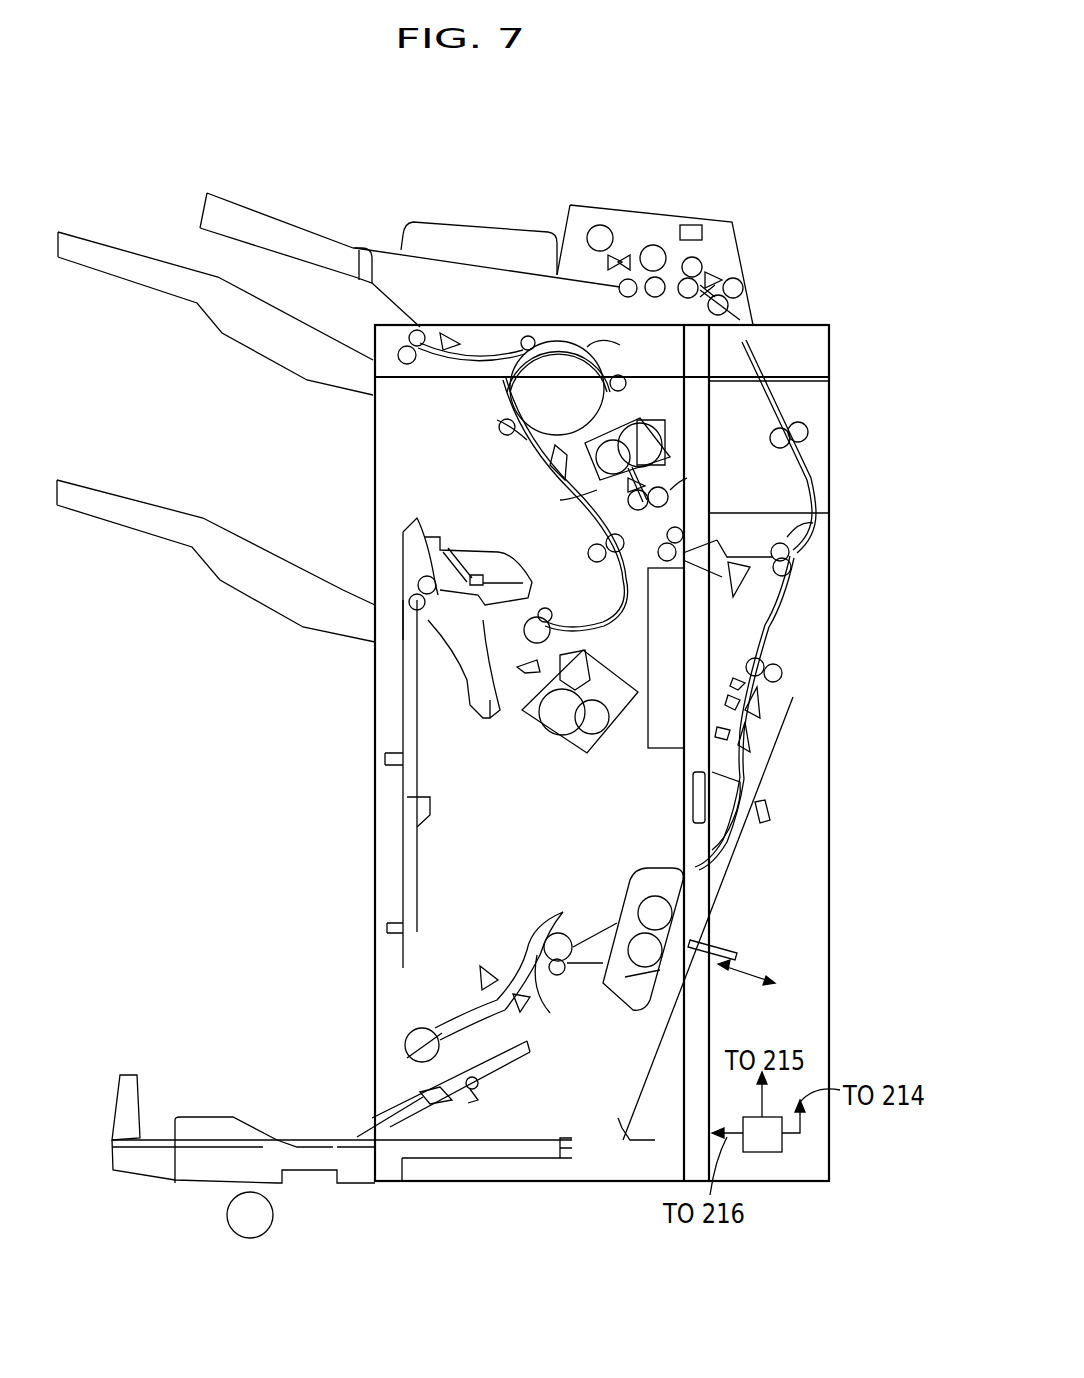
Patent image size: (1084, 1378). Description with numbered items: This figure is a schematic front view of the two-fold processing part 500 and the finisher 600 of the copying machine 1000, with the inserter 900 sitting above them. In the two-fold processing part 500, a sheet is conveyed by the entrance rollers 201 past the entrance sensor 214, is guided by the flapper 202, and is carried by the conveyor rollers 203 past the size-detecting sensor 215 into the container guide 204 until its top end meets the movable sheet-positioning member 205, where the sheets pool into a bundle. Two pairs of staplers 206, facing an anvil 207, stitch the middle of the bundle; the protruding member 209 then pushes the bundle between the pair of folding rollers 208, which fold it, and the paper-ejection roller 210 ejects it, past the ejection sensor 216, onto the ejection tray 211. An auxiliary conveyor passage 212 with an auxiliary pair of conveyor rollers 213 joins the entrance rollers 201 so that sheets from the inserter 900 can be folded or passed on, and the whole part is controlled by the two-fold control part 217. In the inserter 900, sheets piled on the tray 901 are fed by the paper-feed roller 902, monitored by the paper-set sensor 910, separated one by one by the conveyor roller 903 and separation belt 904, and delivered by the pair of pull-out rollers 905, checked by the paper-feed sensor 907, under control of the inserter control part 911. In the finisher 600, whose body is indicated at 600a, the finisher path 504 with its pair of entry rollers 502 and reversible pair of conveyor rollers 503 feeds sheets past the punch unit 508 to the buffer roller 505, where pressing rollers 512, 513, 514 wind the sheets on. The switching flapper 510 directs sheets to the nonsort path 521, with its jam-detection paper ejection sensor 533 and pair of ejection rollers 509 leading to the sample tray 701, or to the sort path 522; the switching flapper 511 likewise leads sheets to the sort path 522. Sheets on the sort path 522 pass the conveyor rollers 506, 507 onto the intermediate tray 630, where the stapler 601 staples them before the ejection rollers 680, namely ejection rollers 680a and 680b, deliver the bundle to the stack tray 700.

The sample tray 701 is at (88, 232).
The stack tray 700 is at (80, 482).
The tray 901 is at (370, 245).
The pair of ejection rollers 509 is at (417, 330).
The finisher 600 is at (483, 318).
The pressing roller 513 is at (528, 336).
The jam-detection paper ejection sensor 533 is at (447, 332).
The nonsort path 521 is at (427, 362).
The pressing roller 512 is at (660, 368).
The buffer roller 505 is at (587, 347).
The switching flapper 510 is at (498, 425).
The pressing roller 514 is at (493, 438).
The switching flapper 511 is at (543, 462).
The sort path 522 is at (547, 467).
The conveyor roller 506 is at (588, 557).
The conveyor roller 507 is at (583, 597).
The stapler 601 is at (580, 660).
The intermediate tray 630 is at (472, 692).
The discharge unit 680 is at (358, 448).
The ejection roller 680a is at (373, 537).
The ejection roller 680b is at (373, 563).
The side wall of image forming unit 600a is at (375, 953).
The inserter 900 is at (742, 210).
The paper-feed roller 902 is at (600, 225).
The paper-set sensor 910 is at (630, 278).
The conveyor roller 903 is at (655, 245).
The inserter control part 911 is at (692, 224).
The separation belt 904 is at (618, 294).
The pair of pull-out rollers 905 is at (702, 263).
The paper-feed sensor 907 is at (724, 280).
The two-fold processing part 500 is at (793, 319).
The copying machine 1000 is at (841, 349).
The auxiliary conveyor passage 212 is at (777, 400).
The auxiliary pair of conveyor rollers 213 is at (805, 433).
The entrance rollers 201 is at (792, 568).
The flapper 202 is at (748, 577).
The entrance sensor 214 is at (787, 612).
The conveyor rollers 203 is at (784, 665).
The size-detecting sensor 215 is at (742, 678).
The staplers 206 is at (693, 800).
The anvil 207 is at (770, 823).
The punch unit 508 is at (676, 418).
The pair of conveyor rollers 503 is at (672, 493).
The finisher path 504 is at (614, 499).
The pair of entry rollers 502 is at (673, 517).
The pair of folding rollers 208 is at (638, 912).
The paper-ejection roller 210 is at (568, 986).
The ejection sensor 216 is at (528, 1010).
The protruding member 209 is at (715, 947).
The container guide 204 is at (653, 1043).
The movable sheet-positioning member 205 is at (650, 1140).
The two-fold control part 217 is at (775, 1152).
The ejection tray 211 is at (295, 1138).